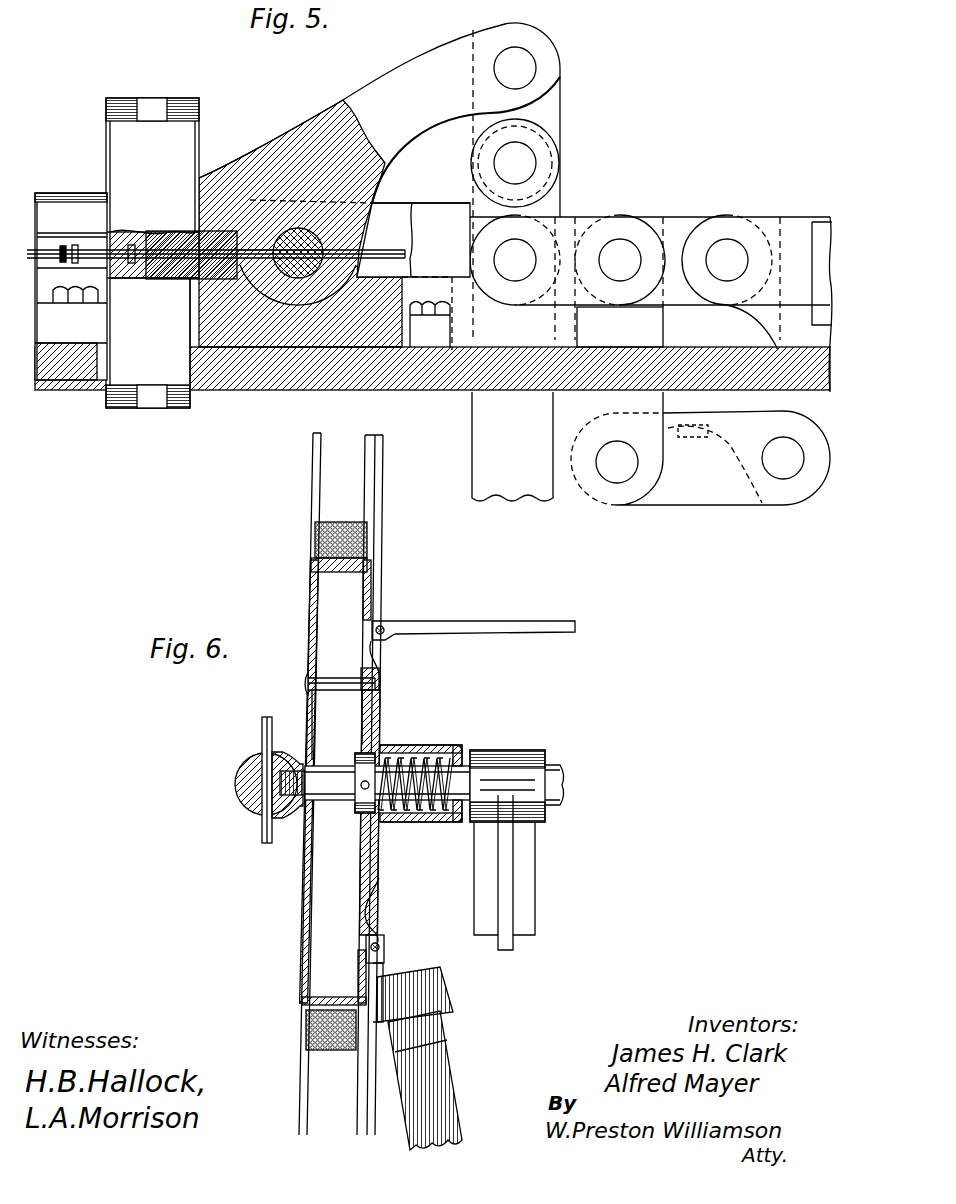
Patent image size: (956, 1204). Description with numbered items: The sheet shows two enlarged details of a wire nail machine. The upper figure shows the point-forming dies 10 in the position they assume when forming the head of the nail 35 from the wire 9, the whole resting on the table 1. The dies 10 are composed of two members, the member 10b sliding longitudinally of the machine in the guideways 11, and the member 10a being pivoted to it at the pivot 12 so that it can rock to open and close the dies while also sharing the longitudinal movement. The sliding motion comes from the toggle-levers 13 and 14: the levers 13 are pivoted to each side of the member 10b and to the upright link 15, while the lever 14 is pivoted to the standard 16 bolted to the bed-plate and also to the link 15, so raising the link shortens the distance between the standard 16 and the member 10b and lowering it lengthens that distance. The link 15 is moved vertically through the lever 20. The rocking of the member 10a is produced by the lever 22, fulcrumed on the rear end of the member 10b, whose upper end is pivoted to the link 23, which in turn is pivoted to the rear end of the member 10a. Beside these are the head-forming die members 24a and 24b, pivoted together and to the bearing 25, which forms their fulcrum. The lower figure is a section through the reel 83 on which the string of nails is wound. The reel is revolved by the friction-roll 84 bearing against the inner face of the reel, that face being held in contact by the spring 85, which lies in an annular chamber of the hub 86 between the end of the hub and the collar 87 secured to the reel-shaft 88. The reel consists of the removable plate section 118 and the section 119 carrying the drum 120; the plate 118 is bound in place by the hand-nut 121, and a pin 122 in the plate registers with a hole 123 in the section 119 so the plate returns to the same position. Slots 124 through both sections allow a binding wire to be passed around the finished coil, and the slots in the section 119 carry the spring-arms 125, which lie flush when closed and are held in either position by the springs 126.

In FIG. 5, the table 1 is at (447, 392).
In FIG. 5, the wire 9 is at (406, 265).
In FIG. 5, the point-forming dies 10 is at (379, 113).
In FIG. 5, the die member 10a is at (305, 140).
In FIG. 5, the die member 10b is at (226, 390).
In FIG. 5, the guideways 11 is at (413, 276).
In FIG. 5, the pivot 12 is at (320, 236).
In FIG. 5, the toggle-levers 13 is at (575, 222).
In FIG. 5, the toggle-lever 14 is at (676, 222).
In FIG. 5, the upright link 15 is at (620, 327).
In FIG. 5, the standard 16 is at (793, 222).
In FIG. 5, the lever 20 is at (700, 448).
In FIG. 5, the lever 22 is at (512, 446).
In FIG. 5, the link 23 is at (560, 118).
In FIG. 5, the head-forming die member 24a is at (152, 165).
In FIG. 5, the head-forming die member 24b is at (152, 319).
In FIG. 5, the bearing 25 is at (72, 193).
In FIG. 5, the nail 35 is at (64, 246).
In FIG. 6, the reel 83 is at (279, 659).
In FIG. 6, the friction-roll 84 is at (454, 990).
In FIG. 6, the spring 85 is at (432, 755).
In FIG. 6, the spring 86 is at (410, 750).
In FIG. 6, the collar 87 is at (370, 760).
In FIG. 6, the reel-shaft 88 is at (563, 788).
In FIG. 6, the removable section 118 is at (310, 598).
In FIG. 6, the reel section 119 is at (372, 594).
In FIG. 6, the drum 120 is at (341, 575).
In FIG. 6, the hand-nut 121 is at (252, 805).
In FIG. 6, the pin 122 is at (341, 690).
In FIG. 6, the hole 123 is at (380, 684).
In FIG. 6, the slots 124 is at (311, 487).
In FIG. 6, the spring-arms 125 is at (492, 612).
In FIG. 6, the springs 126 is at (382, 650).